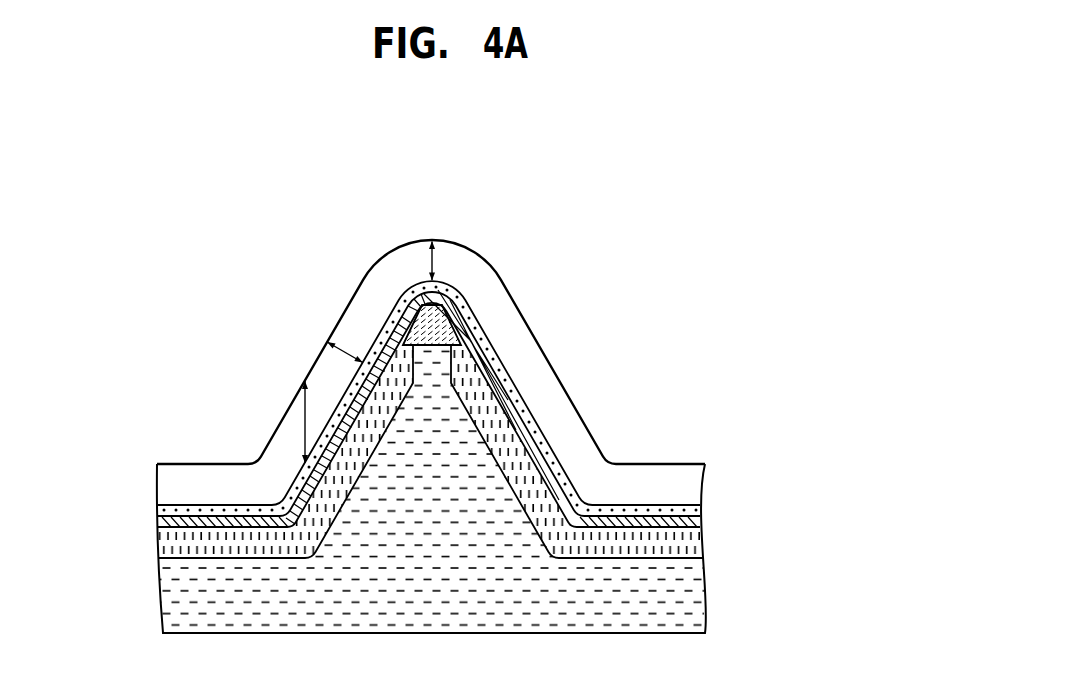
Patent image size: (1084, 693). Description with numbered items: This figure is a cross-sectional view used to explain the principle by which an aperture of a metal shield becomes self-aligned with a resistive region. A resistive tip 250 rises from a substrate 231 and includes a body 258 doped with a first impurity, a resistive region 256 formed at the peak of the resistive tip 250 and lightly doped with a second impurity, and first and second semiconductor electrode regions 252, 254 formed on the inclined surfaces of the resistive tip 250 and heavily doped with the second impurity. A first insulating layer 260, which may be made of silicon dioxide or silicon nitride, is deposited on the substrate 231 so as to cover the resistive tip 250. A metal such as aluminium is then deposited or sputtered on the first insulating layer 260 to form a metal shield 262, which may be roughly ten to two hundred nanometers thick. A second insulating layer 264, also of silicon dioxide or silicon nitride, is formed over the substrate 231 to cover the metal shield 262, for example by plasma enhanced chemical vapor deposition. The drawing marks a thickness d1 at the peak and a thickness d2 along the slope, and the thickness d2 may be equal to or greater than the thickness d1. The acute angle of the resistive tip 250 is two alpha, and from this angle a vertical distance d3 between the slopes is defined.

The substrate 231 is at (724, 612).
The resistive tip 250 is at (596, 280).
The first semiconductor electrode region 252 is at (178, 542).
The second semiconductor electrode region 254 is at (690, 546).
The resistive region 256 is at (392, 305).
The body 258 is at (408, 582).
The first insulating layer 260 is at (555, 472).
The metal shield 262 is at (533, 420).
The second insulating layer 264 is at (528, 358).
The thickness d1 is at (433, 258).
The thickness d2 is at (358, 358).
The vertical distance between slopes d3 is at (303, 425).